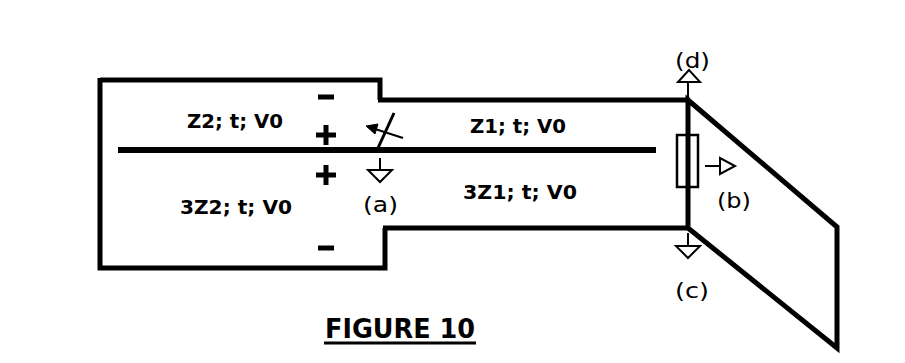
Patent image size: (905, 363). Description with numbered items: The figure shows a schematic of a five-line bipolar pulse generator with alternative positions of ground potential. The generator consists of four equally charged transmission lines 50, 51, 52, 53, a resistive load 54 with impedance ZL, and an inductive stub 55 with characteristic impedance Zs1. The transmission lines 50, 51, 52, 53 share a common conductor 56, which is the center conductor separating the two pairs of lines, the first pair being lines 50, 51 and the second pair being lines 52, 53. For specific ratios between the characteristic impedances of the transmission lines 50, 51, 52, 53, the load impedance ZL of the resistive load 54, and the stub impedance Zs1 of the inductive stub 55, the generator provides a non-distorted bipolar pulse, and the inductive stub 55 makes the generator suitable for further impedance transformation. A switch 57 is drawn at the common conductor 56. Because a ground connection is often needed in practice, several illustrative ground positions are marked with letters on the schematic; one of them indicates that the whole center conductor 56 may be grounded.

The transmission line 50 is at (588, 118).
The transmission line 51 is at (213, 97).
The transmission line 52 is at (157, 238).
The transmission line 53 is at (485, 205).
The resistive load 54 is at (705, 148).
The inductive stub 55 is at (780, 228).
The common conductor 56 is at (425, 150).
The switch 57 is at (393, 83).